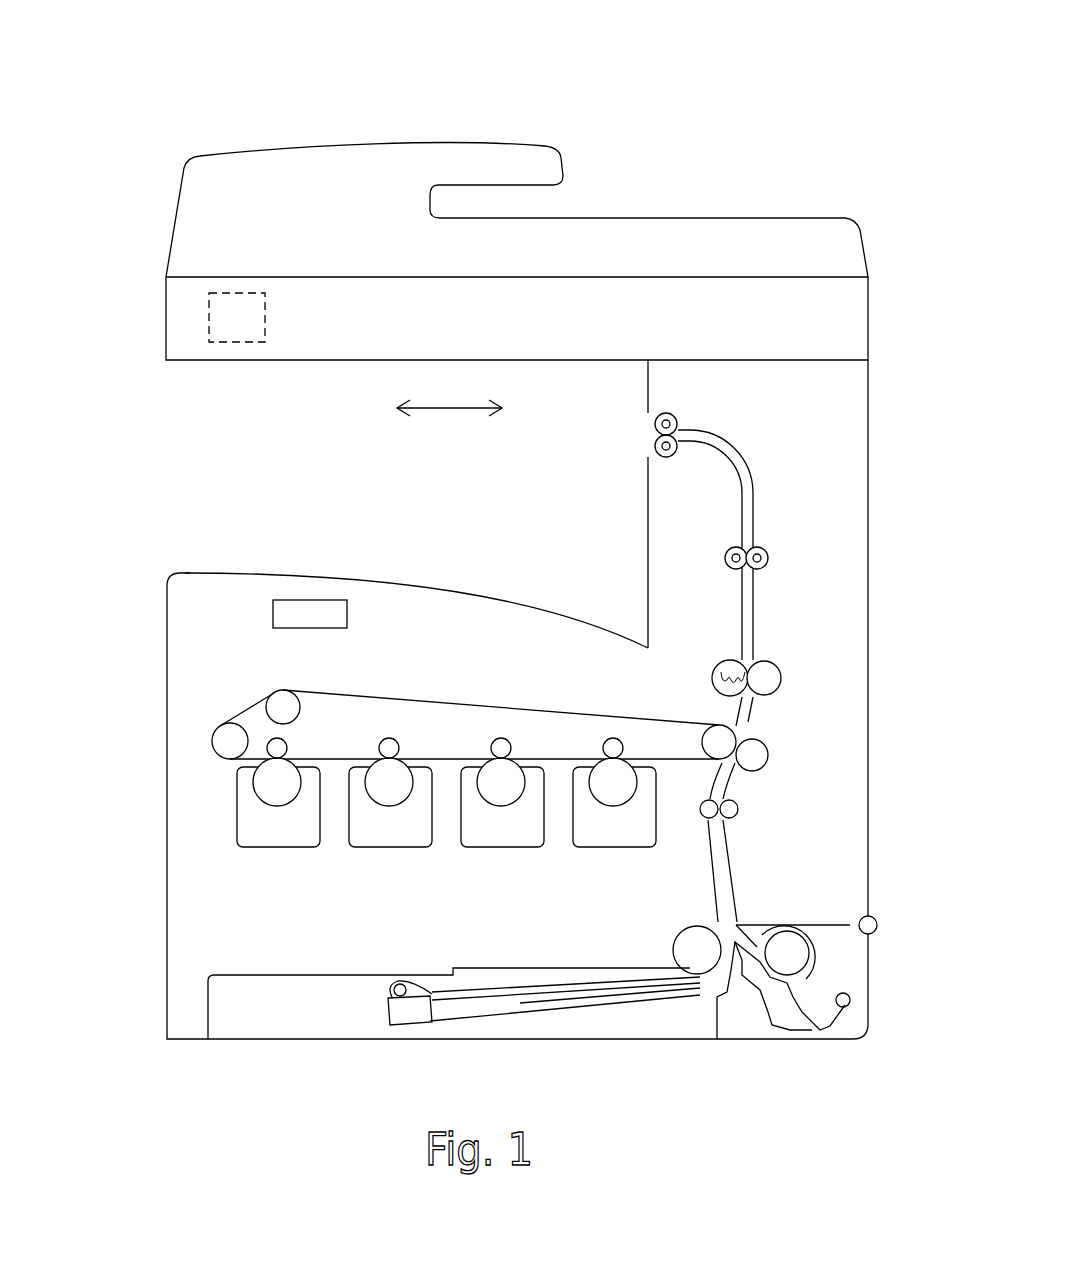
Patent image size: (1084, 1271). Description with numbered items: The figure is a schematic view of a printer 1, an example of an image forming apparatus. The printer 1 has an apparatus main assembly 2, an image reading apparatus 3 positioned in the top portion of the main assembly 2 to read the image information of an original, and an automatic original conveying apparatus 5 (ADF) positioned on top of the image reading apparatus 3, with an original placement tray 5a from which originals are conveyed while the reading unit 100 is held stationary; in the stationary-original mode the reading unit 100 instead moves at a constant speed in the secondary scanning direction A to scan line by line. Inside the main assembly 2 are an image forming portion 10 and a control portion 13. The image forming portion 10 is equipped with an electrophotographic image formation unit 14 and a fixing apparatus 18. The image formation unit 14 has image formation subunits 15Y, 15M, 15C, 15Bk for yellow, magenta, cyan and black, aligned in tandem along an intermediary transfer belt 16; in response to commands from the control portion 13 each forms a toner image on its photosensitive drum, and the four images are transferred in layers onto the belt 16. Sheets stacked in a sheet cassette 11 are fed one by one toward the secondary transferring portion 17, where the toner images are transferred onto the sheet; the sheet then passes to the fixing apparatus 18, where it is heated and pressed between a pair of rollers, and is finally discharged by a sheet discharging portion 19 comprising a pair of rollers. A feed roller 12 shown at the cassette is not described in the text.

The printer 1 is at (560, 78).
The apparatus main assembly 2 is at (887, 430).
The image reading apparatus 3 is at (148, 292).
The automatic original conveying apparatus 5 is at (227, 140).
The original placement tray 5a is at (395, 140).
The reading unit 100 is at (208, 332).
The image forming portion 10 is at (836, 692).
The sheet cassette 11 is at (202, 960).
The sheet feed roller 12 is at (674, 936).
The control portion 13 is at (310, 598).
The image formation unit 14 is at (207, 723).
The image formation subunit 15Y is at (246, 852).
The image formation subunit 15M is at (359, 852).
The image formation subunit 15C is at (471, 852).
The image formation subunit 15Bk is at (583, 852).
The intermediary transfer belt 16 is at (402, 690).
The secondary transferring portion 17 is at (750, 733).
The fixing apparatus 18 is at (787, 656).
The sheet discharging portion 19 is at (686, 420).